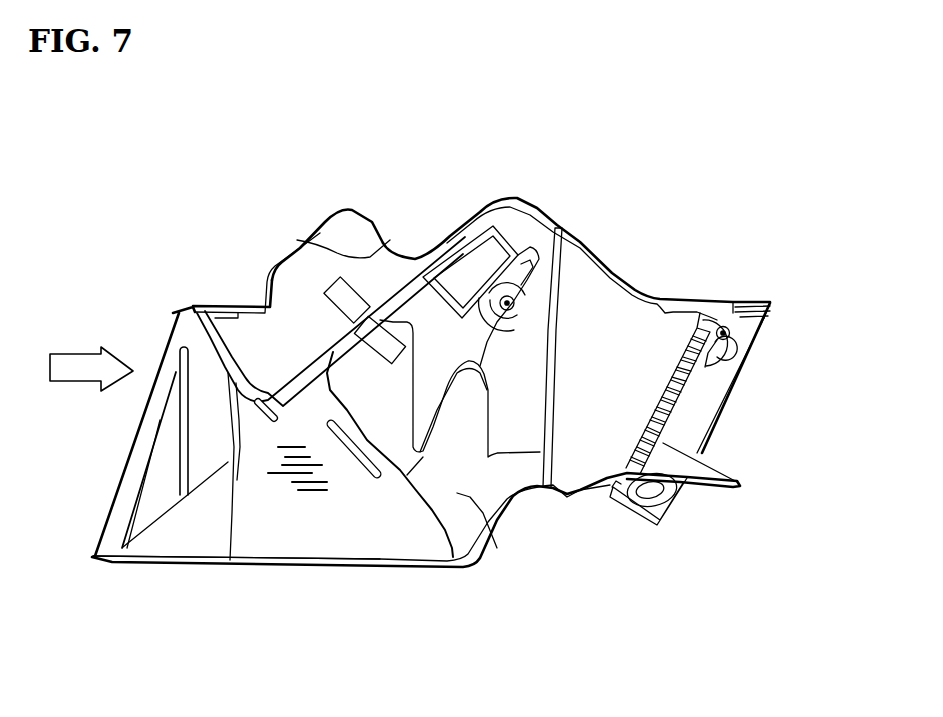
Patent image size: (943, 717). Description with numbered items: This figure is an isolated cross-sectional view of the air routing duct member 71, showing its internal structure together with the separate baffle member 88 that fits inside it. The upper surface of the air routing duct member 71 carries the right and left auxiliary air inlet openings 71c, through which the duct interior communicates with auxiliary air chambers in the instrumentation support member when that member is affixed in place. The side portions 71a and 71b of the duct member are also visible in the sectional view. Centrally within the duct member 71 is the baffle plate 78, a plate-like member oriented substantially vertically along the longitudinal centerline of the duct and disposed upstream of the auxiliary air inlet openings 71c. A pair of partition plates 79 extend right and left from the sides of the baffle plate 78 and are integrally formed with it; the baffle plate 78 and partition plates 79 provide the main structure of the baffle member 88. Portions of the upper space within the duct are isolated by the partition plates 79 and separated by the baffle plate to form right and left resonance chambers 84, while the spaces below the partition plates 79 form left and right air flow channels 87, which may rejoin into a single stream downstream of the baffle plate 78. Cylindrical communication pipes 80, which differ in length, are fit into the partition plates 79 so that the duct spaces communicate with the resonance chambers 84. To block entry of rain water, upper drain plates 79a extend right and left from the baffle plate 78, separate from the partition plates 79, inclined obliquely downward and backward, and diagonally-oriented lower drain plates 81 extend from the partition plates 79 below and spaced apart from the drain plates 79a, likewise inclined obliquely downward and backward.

The air routing duct member 71 is at (617, 178).
The side wall 71a is at (137, 478).
The hinge side portion 71b is at (697, 420).
The auxiliary air inlet openings 71c is at (485, 250).
The baffle plate 78 is at (293, 533).
The partition plates 79 is at (294, 318).
The upper drain plates 79a is at (230, 562).
The communication pipes 80 is at (359, 290).
The lower drain plates 81 is at (368, 425).
The resonance chambers 84 is at (300, 267).
The air flow channels 87 is at (490, 554).
The baffle member 88 is at (173, 590).